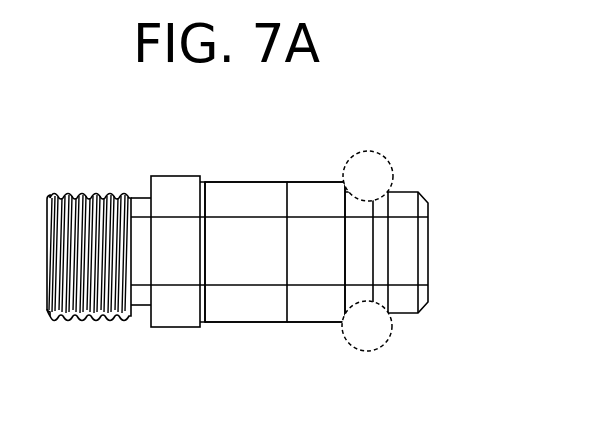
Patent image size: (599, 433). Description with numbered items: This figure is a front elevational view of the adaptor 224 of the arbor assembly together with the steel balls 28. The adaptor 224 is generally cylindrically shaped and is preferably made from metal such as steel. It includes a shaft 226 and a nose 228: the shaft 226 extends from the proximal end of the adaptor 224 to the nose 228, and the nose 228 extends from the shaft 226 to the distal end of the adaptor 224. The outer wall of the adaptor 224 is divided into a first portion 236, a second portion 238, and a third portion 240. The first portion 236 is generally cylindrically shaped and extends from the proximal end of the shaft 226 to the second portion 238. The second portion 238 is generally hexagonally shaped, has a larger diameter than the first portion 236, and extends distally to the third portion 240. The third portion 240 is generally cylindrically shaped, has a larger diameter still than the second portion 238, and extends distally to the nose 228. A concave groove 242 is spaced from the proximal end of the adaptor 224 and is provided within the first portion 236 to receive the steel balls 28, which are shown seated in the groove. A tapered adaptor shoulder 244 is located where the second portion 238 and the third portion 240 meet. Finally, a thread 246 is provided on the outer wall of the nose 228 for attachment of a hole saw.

The adaptor 224 is at (446, 321).
The shaft 226 is at (262, 322).
The nose 228 is at (92, 190).
The first portion 236 is at (323, 182).
The second portion 238 is at (248, 182).
The third portion 240 is at (175, 176).
The concave groove 242 is at (364, 199).
The tapered adaptor shoulder 244 is at (203, 327).
The thread 246 is at (90, 316).
The steel balls 28 is at (392, 350).